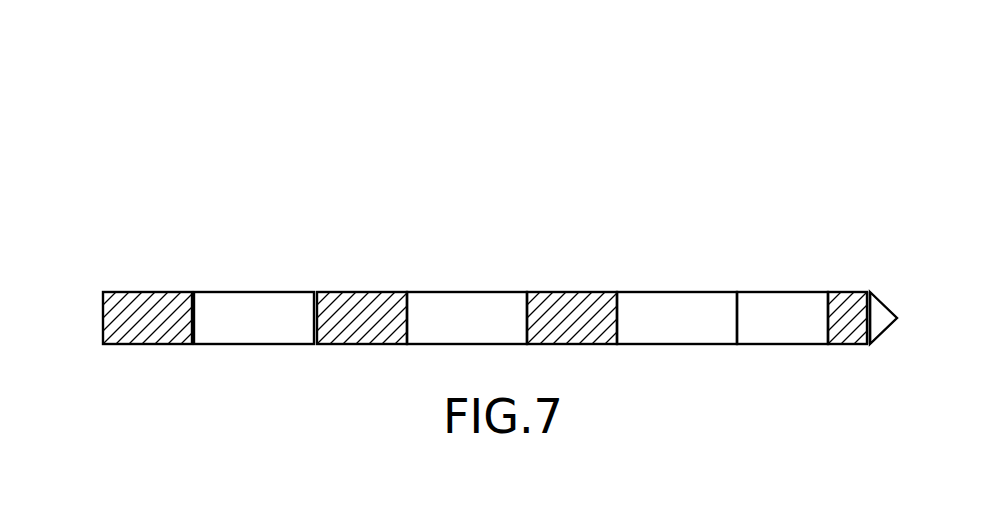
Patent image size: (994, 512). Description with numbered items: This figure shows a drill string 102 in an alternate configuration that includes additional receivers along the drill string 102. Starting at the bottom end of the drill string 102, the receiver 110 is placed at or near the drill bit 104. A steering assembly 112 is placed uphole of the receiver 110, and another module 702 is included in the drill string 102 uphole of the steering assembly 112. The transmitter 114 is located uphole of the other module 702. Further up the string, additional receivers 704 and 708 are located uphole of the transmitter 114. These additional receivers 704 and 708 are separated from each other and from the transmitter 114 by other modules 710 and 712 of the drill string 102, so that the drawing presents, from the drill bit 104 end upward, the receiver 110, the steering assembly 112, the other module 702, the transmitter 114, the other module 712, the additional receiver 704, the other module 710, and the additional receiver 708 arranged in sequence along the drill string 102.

The drill string 102 is at (116, 104).
The additional receiver 708 is at (147, 290).
The other module 710 is at (255, 290).
The additional receiver 704 is at (368, 290).
The other module 712 is at (463, 292).
The transmitter 114 is at (570, 292).
The other module 702 is at (683, 292).
The steering assembly 112 is at (782, 292).
The receiver 110 is at (847, 292).
The drill bit 104 is at (883, 300).